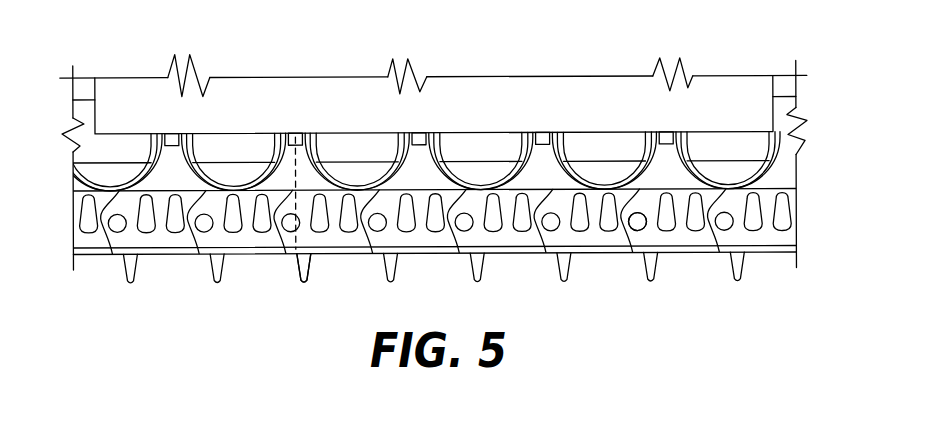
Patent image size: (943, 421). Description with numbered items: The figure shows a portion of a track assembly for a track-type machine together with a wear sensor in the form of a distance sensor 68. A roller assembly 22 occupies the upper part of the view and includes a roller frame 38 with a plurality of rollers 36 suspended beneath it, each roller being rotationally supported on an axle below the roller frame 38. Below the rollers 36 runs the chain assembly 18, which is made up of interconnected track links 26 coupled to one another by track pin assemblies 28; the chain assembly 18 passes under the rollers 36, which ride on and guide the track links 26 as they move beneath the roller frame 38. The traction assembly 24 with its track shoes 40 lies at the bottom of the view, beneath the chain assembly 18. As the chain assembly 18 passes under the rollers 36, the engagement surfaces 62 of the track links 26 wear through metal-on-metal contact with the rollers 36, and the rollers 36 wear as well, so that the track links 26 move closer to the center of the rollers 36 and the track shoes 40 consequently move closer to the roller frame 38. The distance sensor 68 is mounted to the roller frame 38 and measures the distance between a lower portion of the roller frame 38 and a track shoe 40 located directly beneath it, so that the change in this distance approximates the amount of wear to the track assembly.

The roller assembly 22 is at (120, 86).
The roller frame 38 is at (492, 99).
The rollers 36 is at (568, 134).
The engagement surfaces 62 is at (420, 134).
The distance sensor 68 is at (291, 134).
The chain assembly 18 is at (804, 210).
The traction assembly 24 is at (807, 263).
The track links 26 is at (438, 248).
The track pin assemblies 28 is at (641, 234).
The track shoes 40 is at (262, 258).